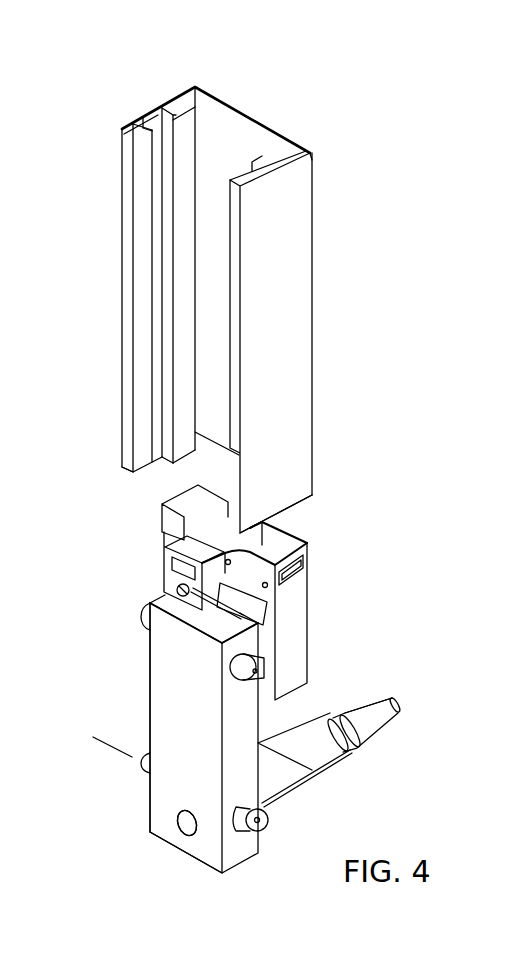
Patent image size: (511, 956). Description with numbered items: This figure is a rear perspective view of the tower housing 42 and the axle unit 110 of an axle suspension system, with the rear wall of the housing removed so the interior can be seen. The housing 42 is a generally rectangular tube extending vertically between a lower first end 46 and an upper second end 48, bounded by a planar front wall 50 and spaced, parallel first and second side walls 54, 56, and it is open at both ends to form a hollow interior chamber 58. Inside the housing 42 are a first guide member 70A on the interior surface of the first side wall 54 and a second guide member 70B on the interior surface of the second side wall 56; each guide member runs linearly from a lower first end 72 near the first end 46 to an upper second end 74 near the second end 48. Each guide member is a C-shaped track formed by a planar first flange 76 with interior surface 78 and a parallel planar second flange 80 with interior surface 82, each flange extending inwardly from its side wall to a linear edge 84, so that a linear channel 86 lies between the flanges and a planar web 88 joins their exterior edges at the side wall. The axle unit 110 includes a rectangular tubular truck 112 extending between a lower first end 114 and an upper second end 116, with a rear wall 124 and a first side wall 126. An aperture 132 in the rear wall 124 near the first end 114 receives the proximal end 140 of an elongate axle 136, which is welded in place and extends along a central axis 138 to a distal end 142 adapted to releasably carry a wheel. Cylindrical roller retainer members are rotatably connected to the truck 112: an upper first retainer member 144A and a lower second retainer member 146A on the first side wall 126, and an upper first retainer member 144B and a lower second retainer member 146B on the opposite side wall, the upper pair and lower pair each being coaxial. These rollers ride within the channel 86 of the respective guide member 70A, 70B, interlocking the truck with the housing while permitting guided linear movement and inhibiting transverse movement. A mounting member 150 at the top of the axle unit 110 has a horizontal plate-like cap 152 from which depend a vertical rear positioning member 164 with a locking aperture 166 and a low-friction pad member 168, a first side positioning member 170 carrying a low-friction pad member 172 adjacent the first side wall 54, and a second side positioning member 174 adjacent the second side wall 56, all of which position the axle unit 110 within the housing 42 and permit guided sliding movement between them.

The housing 42 is at (323, 324).
The lower first end 46 is at (297, 506).
The upper second end 48 is at (270, 130).
The front wall 50 is at (238, 110).
The first side wall 54 is at (300, 248).
The second side wall 56 is at (128, 262).
The interior chamber 58 is at (210, 118).
The first guide member 70A is at (303, 148).
The second guide member 70B is at (150, 190).
The lower first end 72 is at (143, 470).
The upper second end 74 is at (147, 130).
The first flange 76 is at (176, 140).
The interior surface 78 is at (167, 165).
The second flange 80 is at (145, 228).
The interior surface 82 is at (152, 262).
The edge 84 is at (195, 330).
The channel 86 is at (152, 372).
The web 88 is at (152, 301).
The axle unit 110 is at (364, 609).
The truck 112 is at (140, 695).
The lower first end 114 is at (162, 843).
The upper second end 116 is at (205, 640).
The rear wall 124 is at (162, 720).
The first side wall 126 is at (257, 723).
The aperture 132 is at (198, 795).
The axle 136 is at (335, 767).
The central axis 138 is at (403, 697).
The proximal end 140 is at (190, 835).
The distal end 142 is at (397, 708).
The upper first retainer member 144A is at (266, 660).
The upper first retainer member 144B is at (140, 622).
The lower second retainer member 146A is at (272, 822).
The lower second retainer member 146B is at (140, 774).
The mounting member 150 is at (317, 595).
The cap 152 is at (280, 533).
The rear positioning member 164 is at (160, 576).
The locking aperture 166 is at (178, 590).
The low-friction pad member 168 is at (172, 563).
The first side positioning member 170 is at (308, 548).
The low-friction pad member 172 is at (295, 572).
The second side positioning member 174 is at (162, 521).